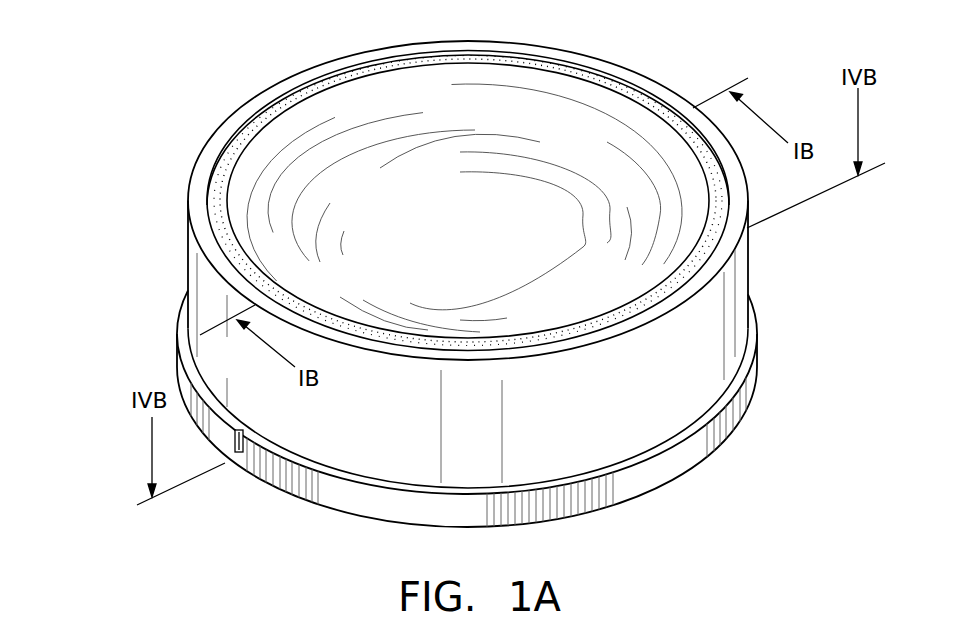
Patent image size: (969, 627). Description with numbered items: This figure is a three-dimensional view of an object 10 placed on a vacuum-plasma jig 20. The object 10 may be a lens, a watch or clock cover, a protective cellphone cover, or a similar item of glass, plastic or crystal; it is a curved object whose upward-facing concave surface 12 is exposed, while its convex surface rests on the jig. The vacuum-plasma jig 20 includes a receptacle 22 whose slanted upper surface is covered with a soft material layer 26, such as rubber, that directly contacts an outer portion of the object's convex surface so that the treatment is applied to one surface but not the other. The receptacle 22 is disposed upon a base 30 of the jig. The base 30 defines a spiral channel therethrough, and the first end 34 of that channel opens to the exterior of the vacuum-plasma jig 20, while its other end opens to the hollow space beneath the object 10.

The object 10 is at (610, 134).
The concave surface 12 is at (300, 139).
The vacuum-plasma jig 20 is at (160, 220).
The receptacle 22 is at (706, 296).
The soft material layer 26 is at (217, 190).
The base 30 is at (697, 445).
The first end of the spiral channel 34 is at (237, 452).